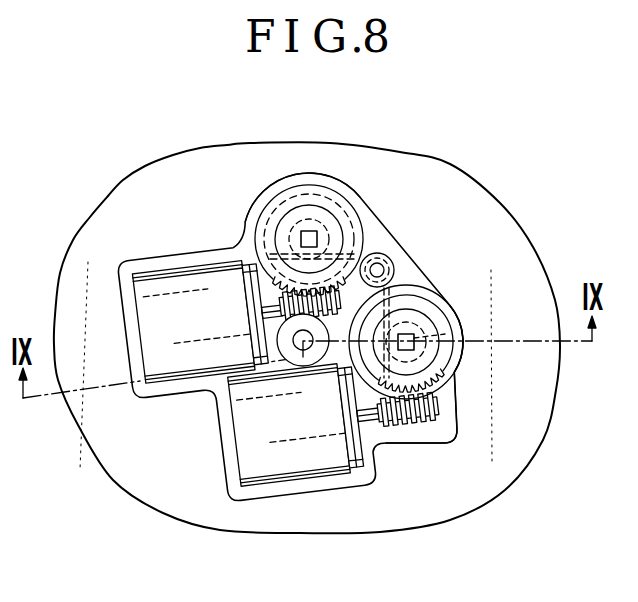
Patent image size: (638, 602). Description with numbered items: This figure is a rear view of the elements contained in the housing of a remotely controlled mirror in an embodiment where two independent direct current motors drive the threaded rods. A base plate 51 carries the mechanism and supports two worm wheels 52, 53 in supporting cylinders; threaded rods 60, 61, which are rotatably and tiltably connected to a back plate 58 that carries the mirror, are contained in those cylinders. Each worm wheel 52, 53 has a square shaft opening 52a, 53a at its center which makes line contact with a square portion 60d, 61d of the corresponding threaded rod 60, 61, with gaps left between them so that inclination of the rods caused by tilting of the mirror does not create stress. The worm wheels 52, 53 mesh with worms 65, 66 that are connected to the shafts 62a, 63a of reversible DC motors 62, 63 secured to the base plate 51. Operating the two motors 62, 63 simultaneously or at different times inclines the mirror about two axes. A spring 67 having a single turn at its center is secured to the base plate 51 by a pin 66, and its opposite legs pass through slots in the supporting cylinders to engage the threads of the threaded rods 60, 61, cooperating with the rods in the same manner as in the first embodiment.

The base plate 51 is at (148, 400).
The worm wheel 52 is at (297, 184).
The square shaft opening 52a is at (318, 232).
The worm wheel 53 is at (446, 382).
The square shaft opening 53a is at (416, 352).
The back plate 58 is at (467, 498).
The threaded rod 60 is at (331, 222).
The square portion 60d is at (291, 227).
The threaded rod 61 is at (439, 336).
The square portion 61d is at (410, 334).
The reversible DC motor 62 is at (200, 331).
The shaft 62a is at (280, 300).
The reversible DC motor 63 is at (299, 432).
The shaft 63a is at (370, 420).
The worm 65 is at (372, 312).
The worm / pin 66 is at (388, 257).
The spring 67 is at (388, 290).